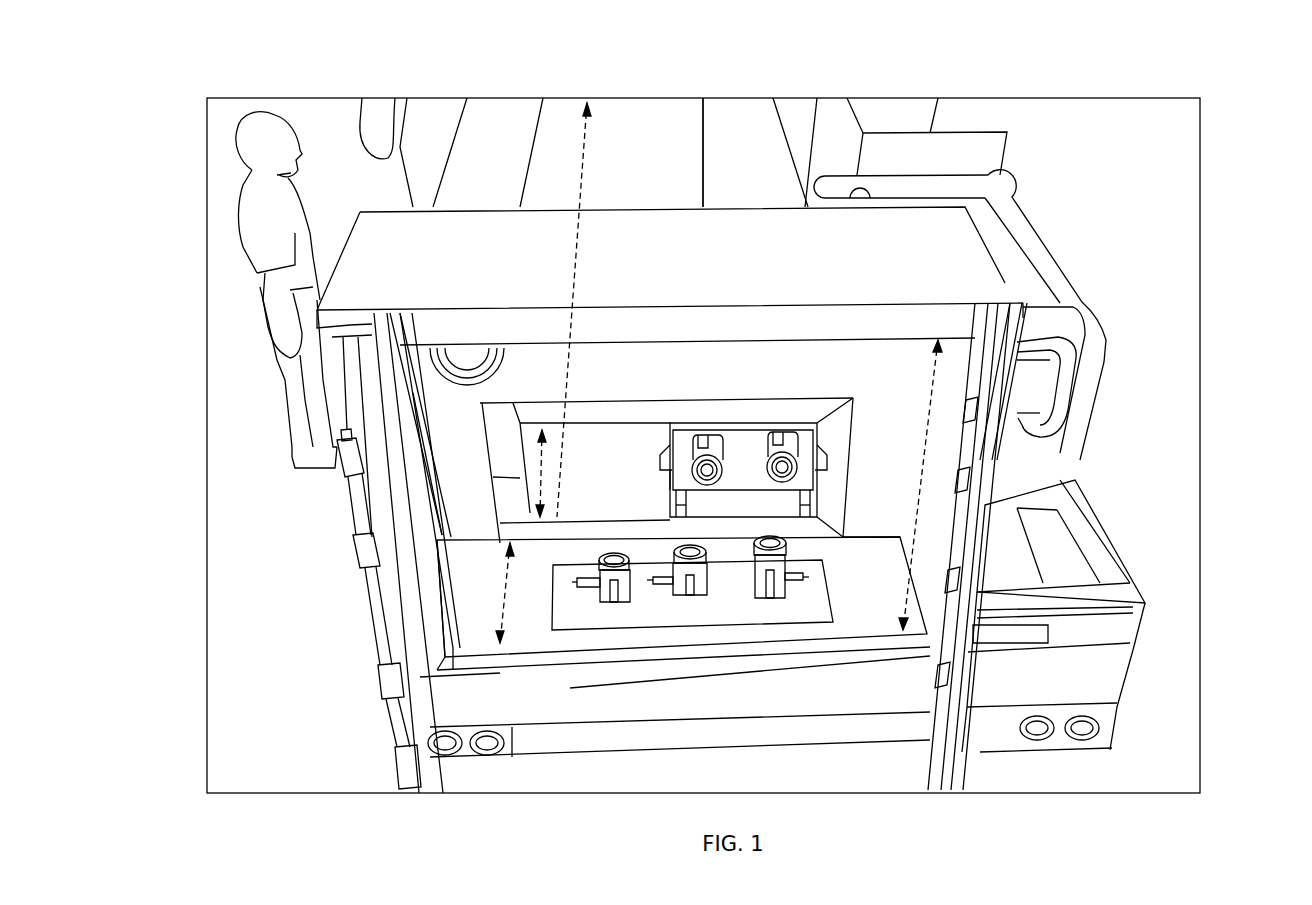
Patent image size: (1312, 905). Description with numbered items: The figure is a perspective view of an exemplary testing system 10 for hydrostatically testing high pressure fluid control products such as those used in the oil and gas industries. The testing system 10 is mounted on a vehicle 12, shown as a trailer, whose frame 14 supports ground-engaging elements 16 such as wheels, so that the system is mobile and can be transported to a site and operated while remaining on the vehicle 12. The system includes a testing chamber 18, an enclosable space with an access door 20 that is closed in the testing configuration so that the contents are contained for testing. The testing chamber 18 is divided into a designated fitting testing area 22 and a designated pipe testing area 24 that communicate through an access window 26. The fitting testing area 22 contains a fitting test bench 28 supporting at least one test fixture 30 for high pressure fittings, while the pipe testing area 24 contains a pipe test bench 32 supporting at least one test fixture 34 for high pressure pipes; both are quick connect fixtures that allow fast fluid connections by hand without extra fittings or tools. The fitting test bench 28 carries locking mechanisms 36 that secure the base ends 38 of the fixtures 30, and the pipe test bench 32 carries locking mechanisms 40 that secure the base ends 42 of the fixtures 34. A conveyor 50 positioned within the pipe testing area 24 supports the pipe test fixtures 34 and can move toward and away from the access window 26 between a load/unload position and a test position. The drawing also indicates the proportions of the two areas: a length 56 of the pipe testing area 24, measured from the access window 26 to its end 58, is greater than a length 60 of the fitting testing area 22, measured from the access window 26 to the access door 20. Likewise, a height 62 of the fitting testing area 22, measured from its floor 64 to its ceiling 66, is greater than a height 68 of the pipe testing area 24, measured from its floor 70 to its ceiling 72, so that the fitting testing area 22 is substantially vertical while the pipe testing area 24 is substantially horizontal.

The testing system 10 is at (1148, 80).
The vehicle 12 is at (1138, 558).
The frame 14 is at (1118, 677).
The ground-engaging elements 16 is at (338, 760).
The testing chamber 18 is at (473, 625).
The access door 20 is at (940, 768).
The designated fitting testing area 22 is at (843, 597).
The designated pipe testing area 24 is at (597, 508).
The access window 26 is at (666, 420).
The fitting test bench 28 is at (583, 623).
The test fixture 30 is at (613, 602).
The pipe test bench 32 is at (750, 443).
The test fixture 34 is at (697, 452).
The locking mechanisms 36 is at (590, 597).
The base ends 38 is at (603, 600).
The locking mechanisms 40 is at (682, 412).
The base ends 42 is at (708, 440).
The conveyor 50 is at (660, 462).
The length of the designated pipe testing area 56 is at (577, 258).
The end of the designated pipe testing area 58 is at (668, 93).
The length of the designated fitting testing area 60 is at (520, 613).
The height of the designated fitting testing area 62 is at (917, 517).
The floor of the designated fitting testing area 64 is at (833, 622).
The ceiling of the designated fitting testing area 66 is at (422, 350).
The height of the designated pipe testing area 68 is at (543, 480).
The floor of the designated pipe testing area 70 is at (523, 512).
The ceiling of the designated pipe testing area 72 is at (520, 428).